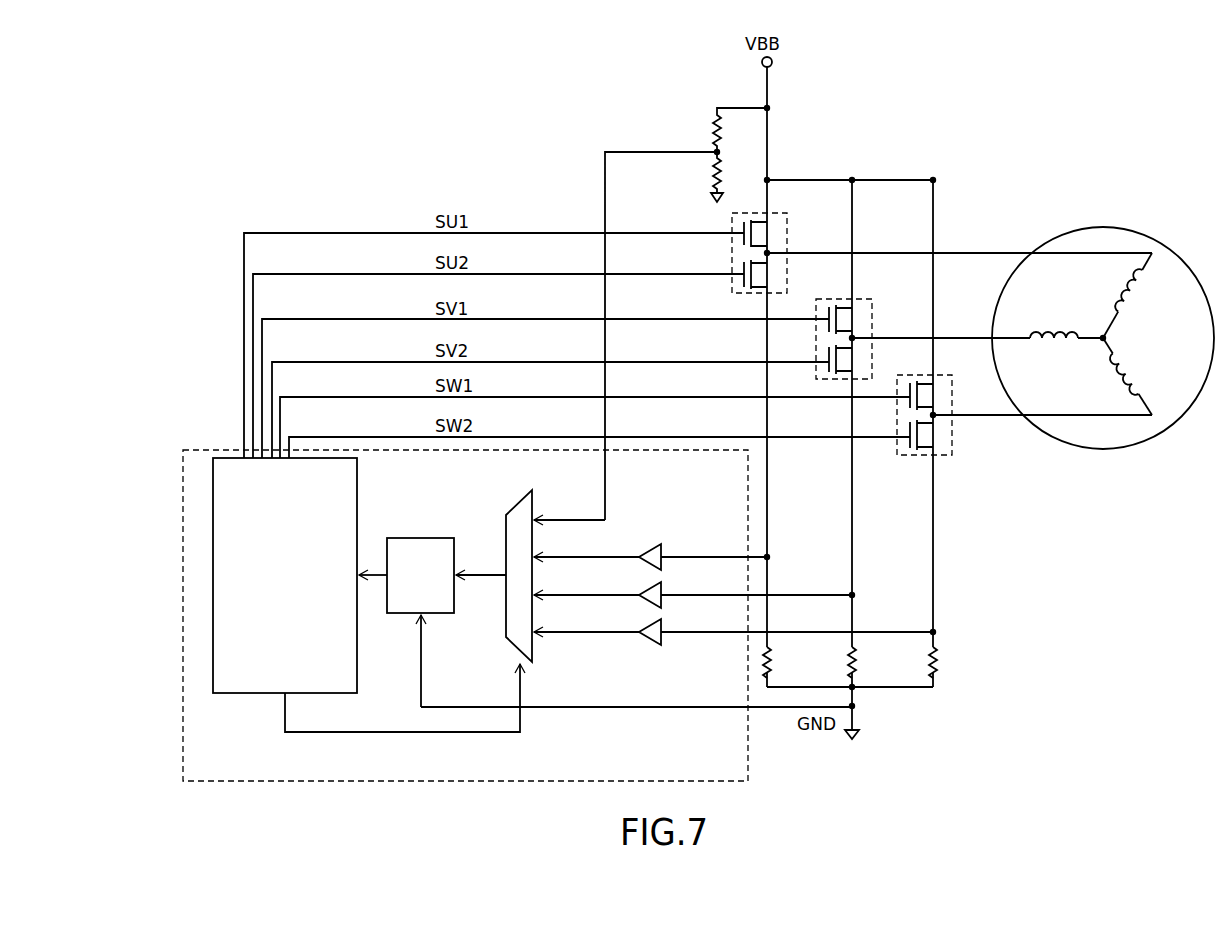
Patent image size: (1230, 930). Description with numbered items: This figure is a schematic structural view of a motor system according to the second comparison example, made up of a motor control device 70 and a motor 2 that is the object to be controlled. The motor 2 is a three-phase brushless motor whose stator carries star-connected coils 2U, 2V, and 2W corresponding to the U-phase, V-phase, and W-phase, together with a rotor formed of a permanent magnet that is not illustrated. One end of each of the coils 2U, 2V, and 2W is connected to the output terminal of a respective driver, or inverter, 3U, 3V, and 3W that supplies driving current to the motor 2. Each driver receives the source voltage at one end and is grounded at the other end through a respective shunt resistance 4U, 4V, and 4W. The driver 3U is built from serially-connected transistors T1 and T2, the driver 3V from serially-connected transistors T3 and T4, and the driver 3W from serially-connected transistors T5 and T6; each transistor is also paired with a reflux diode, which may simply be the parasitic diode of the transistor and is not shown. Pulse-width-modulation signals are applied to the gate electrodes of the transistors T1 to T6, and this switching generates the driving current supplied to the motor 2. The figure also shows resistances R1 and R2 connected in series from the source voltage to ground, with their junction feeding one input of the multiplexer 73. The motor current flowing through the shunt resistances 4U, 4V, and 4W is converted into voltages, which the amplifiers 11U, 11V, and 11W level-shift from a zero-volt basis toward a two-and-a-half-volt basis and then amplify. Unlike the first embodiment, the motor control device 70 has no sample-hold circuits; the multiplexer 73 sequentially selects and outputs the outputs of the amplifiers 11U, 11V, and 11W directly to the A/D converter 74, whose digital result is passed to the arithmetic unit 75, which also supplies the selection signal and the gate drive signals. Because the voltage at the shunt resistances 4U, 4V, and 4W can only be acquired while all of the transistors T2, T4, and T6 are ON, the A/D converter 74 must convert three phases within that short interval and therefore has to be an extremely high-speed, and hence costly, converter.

The motor 2 is at (1103, 322).
The coil 2U is at (1137, 295).
The coil 2V is at (1054, 315).
The coil 2W is at (1109, 376).
The driver 3U is at (541, 331).
The driver 3V is at (588, 365).
The driver 3W is at (636, 447).
The transistor T1 is at (744, 242).
The transistor T2 is at (744, 281).
The transistor T3 is at (854, 318).
The transistor T4 is at (854, 358).
The transistor T5 is at (936, 397).
The transistor T6 is at (936, 437).
The voltage-divider resistor R1 is at (740, 130).
The voltage-divider resistor R2 is at (679, 336).
The shunt resistance 4U is at (783, 662).
The shunt resistance 4V is at (868, 662).
The shunt resistance 4W is at (951, 662).
The amplifier 11U is at (661, 548).
The amplifier 11V is at (661, 603).
The amplifier 11W is at (651, 641).
The multiplexer 73 is at (506, 621).
The A/D converter 74 is at (400, 614).
The arithmetic unit 75 is at (236, 694).
The motor control device 70 is at (748, 762).